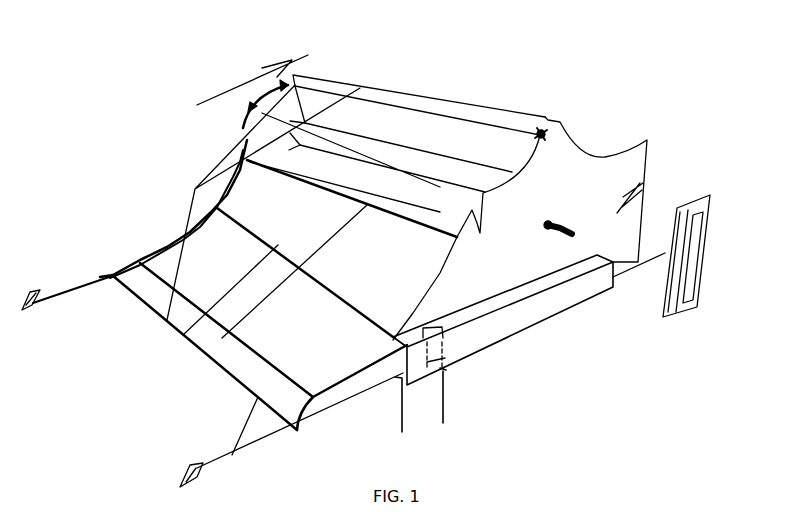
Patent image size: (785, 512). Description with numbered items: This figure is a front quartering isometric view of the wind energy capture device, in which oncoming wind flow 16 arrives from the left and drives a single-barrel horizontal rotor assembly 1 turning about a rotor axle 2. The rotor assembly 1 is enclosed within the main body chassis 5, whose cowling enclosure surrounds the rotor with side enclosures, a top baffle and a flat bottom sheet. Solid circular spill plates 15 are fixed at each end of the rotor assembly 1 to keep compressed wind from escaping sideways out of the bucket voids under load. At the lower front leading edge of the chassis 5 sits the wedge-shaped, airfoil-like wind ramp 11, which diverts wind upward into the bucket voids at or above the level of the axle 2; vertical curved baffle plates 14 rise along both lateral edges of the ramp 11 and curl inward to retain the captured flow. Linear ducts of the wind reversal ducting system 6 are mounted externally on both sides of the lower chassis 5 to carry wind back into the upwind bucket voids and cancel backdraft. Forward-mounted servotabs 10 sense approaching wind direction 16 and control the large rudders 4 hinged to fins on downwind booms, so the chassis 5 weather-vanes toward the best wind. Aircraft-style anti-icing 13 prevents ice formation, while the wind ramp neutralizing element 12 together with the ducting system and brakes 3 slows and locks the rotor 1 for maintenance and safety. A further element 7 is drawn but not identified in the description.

The rotor assembly 1 is at (394, 150).
The rotor axle 2 is at (562, 226).
The brakes 3 is at (540, 133).
The rudders 4 is at (697, 200).
The chassis 5 is at (597, 200).
The wind reversal ducting system 6 is at (533, 308).
The clip bracket 7 is at (477, 337).
The servotabs 10 is at (197, 465).
The wind ramp 11 is at (228, 373).
The wind ramp neutralizing element 12 is at (222, 326).
The anti-icing 13 is at (25, 303).
The baffle plates 14 is at (190, 231).
The spill plates 15 is at (243, 128).
The oncoming wind flow 16 is at (230, 87).